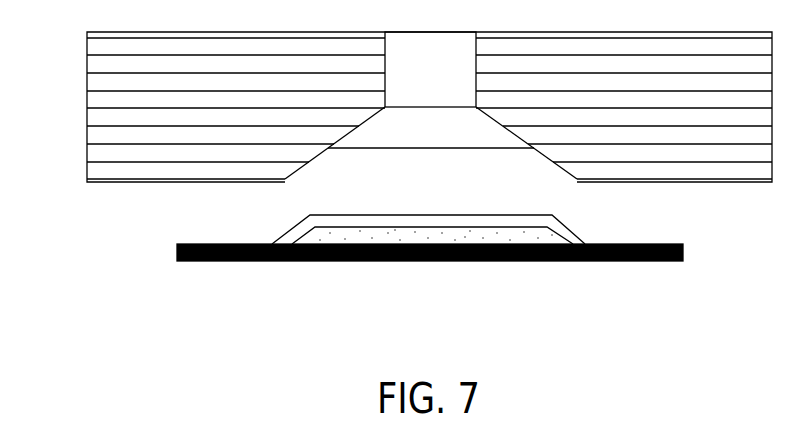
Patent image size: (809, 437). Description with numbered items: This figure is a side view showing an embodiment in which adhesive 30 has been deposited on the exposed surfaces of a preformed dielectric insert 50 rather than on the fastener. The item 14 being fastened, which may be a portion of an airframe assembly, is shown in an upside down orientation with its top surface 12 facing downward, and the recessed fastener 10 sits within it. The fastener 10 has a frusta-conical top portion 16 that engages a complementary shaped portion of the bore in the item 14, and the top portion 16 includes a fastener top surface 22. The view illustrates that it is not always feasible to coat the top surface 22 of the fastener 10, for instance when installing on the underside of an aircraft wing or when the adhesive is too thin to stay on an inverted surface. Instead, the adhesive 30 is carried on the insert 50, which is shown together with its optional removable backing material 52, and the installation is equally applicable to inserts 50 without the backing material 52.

The recessed fastener 10 is at (441, 81).
The top surface 12 is at (123, 182).
The item 14 is at (87, 99).
The top portion 16 is at (441, 138).
The fastener top surface 22 is at (492, 148).
The adhesive 30 is at (580, 240).
The insert 50 is at (297, 237).
The removable backing material 52 is at (203, 261).